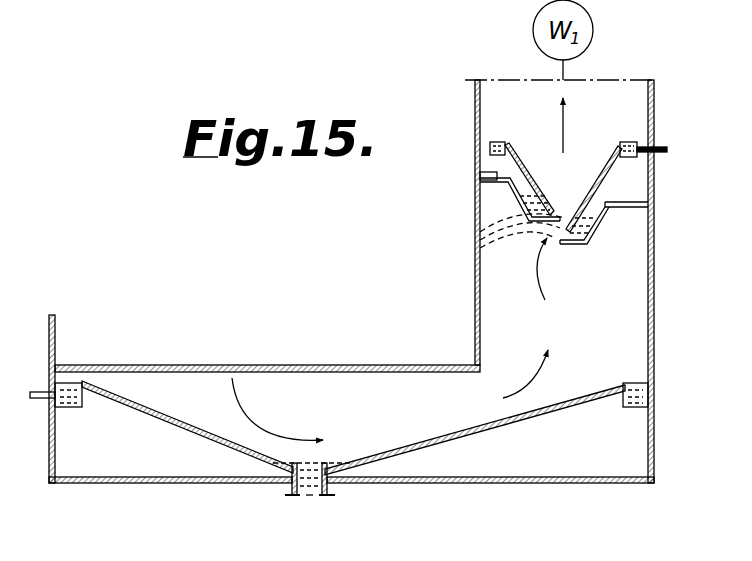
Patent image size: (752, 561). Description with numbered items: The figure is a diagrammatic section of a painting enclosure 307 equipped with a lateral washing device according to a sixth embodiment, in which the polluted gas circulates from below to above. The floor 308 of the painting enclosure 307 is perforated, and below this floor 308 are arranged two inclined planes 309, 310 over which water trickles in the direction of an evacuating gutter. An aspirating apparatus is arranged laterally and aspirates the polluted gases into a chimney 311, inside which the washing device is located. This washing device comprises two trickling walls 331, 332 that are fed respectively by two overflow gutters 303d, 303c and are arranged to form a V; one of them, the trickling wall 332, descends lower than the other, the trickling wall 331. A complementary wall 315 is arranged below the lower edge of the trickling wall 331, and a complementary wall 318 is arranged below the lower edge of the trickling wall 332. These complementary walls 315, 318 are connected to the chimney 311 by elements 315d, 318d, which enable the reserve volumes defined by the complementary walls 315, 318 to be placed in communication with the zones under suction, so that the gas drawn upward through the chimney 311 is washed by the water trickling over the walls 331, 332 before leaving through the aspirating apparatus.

The painting enclosure 307 is at (55, 335).
The floor 308 is at (273, 368).
The inclined plane 309 is at (203, 433).
The inclined plane 310 is at (442, 440).
The chimney 311 is at (475, 100).
The overflow gutter 303d is at (490, 148).
The overflow gutter 303c is at (637, 145).
The connecting element 315d is at (480, 177).
The complementary wall 315 is at (510, 205).
The connecting element 318d is at (632, 200).
The complementary wall 318 is at (587, 245).
The trickling wall 331 is at (517, 155).
The trickling wall 332 is at (607, 163).